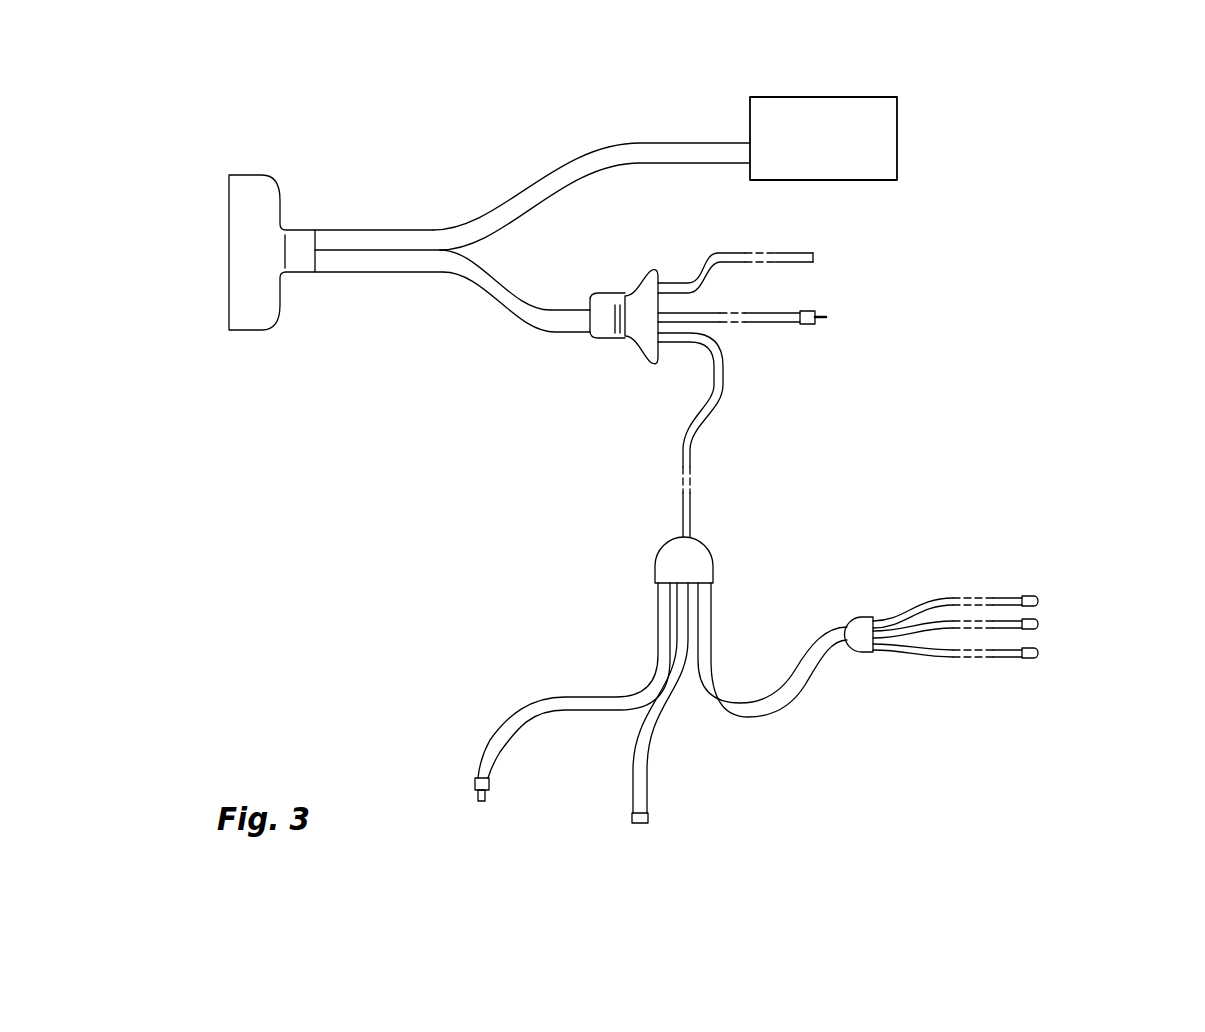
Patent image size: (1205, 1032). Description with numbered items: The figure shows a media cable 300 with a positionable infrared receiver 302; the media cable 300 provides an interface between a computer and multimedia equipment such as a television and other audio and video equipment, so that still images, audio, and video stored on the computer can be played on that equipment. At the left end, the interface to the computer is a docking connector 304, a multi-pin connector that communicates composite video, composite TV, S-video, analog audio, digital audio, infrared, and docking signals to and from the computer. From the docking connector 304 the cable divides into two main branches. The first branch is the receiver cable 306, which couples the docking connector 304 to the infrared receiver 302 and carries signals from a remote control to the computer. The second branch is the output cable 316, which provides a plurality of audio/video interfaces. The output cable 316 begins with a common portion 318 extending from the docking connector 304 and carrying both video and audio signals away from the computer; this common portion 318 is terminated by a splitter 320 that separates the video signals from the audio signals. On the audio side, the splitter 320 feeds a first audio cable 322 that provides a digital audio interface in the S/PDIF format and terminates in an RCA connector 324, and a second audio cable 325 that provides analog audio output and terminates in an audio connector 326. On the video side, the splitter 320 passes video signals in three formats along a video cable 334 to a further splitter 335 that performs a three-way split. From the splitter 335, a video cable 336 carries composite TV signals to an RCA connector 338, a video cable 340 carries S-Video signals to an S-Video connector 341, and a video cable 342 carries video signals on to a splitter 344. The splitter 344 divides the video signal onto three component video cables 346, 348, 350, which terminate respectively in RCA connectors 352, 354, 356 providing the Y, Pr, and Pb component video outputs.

The media cable 300 is at (388, 486).
The infrared receiver 302 is at (783, 97).
The docking connector 304 is at (270, 192).
The receiver cable 306 is at (522, 190).
The output cable 316 is at (850, 443).
The common portion 318 is at (485, 278).
The splitter 320 is at (635, 293).
The first audio cable 322 is at (710, 320).
The RCA connector 324 is at (807, 323).
The second audio cable 325 is at (729, 250).
The audio connector 326 is at (798, 253).
The video cable 334 is at (698, 435).
The splitter 335 is at (697, 545).
The video cable 336 is at (620, 702).
The RCA connector 338 is at (475, 783).
The video cable 340 is at (662, 722).
The S-Video connector 341 is at (650, 818).
The video cable 342 is at (712, 660).
The splitter 344 is at (862, 620).
The component video cable 346 is at (1000, 597).
The component video cable 348 is at (1012, 620).
The component video cable 350 is at (1008, 663).
The RCA connector 352 is at (1035, 600).
The RCA connector 354 is at (1035, 630).
The RCA connector 356 is at (1030, 660).